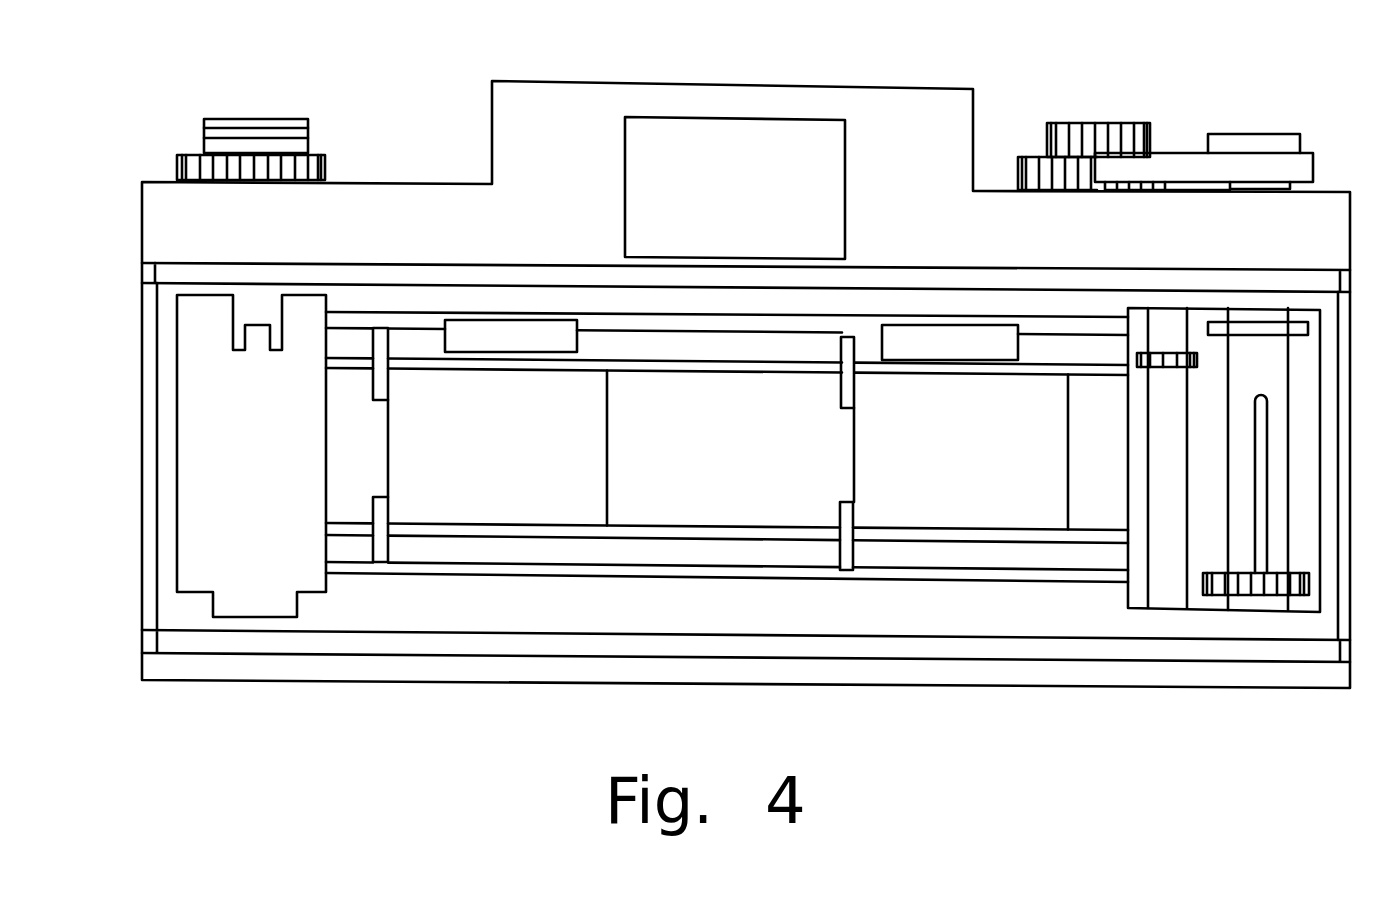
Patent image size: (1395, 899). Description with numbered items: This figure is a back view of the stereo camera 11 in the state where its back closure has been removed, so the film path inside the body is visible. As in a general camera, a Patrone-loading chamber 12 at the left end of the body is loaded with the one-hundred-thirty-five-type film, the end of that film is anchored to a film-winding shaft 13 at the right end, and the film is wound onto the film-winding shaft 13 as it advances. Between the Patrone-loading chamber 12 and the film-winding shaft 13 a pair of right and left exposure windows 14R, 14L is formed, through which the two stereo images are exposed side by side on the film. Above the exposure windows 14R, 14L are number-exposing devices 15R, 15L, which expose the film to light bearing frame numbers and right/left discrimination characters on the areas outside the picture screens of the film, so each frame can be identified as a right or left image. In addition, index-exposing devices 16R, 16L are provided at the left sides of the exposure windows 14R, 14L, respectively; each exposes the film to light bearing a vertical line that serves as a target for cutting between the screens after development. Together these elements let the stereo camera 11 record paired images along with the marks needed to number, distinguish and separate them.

The stereo camera 11 is at (428, 127).
The Patrone-loading chamber 12 is at (215, 448).
The film-winding shaft 13 is at (1285, 367).
The left exposure window 14L is at (503, 513).
The right exposure window 14R is at (958, 520).
The left number-exposing device 15L is at (468, 340).
The right number-exposing device 15R is at (1003, 342).
The left index-exposing device 16L is at (381, 345).
The right index-exposing device 16R is at (845, 393).